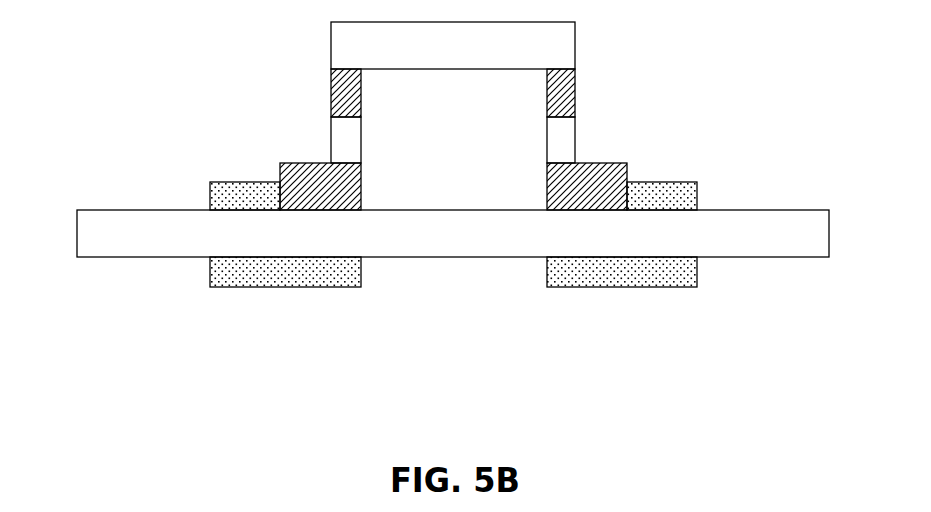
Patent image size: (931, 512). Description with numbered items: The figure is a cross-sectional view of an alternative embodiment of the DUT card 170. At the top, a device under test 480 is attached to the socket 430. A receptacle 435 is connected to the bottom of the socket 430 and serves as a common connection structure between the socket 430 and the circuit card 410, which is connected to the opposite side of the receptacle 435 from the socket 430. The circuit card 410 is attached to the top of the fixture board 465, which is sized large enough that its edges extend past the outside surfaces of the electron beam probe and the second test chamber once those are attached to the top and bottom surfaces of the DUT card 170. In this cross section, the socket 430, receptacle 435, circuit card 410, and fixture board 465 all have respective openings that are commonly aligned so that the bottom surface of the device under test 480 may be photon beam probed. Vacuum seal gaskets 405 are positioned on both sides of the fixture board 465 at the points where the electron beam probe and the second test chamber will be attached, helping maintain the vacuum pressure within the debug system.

The DUT card 170 is at (156, 58).
The vacuum seal gaskets 405 is at (210, 196).
The circuit card 410 is at (605, 163).
The socket 430 is at (331, 90).
The receptacle 435 is at (340, 140).
The fixture board 465 is at (777, 257).
The device under test 480 is at (575, 47).